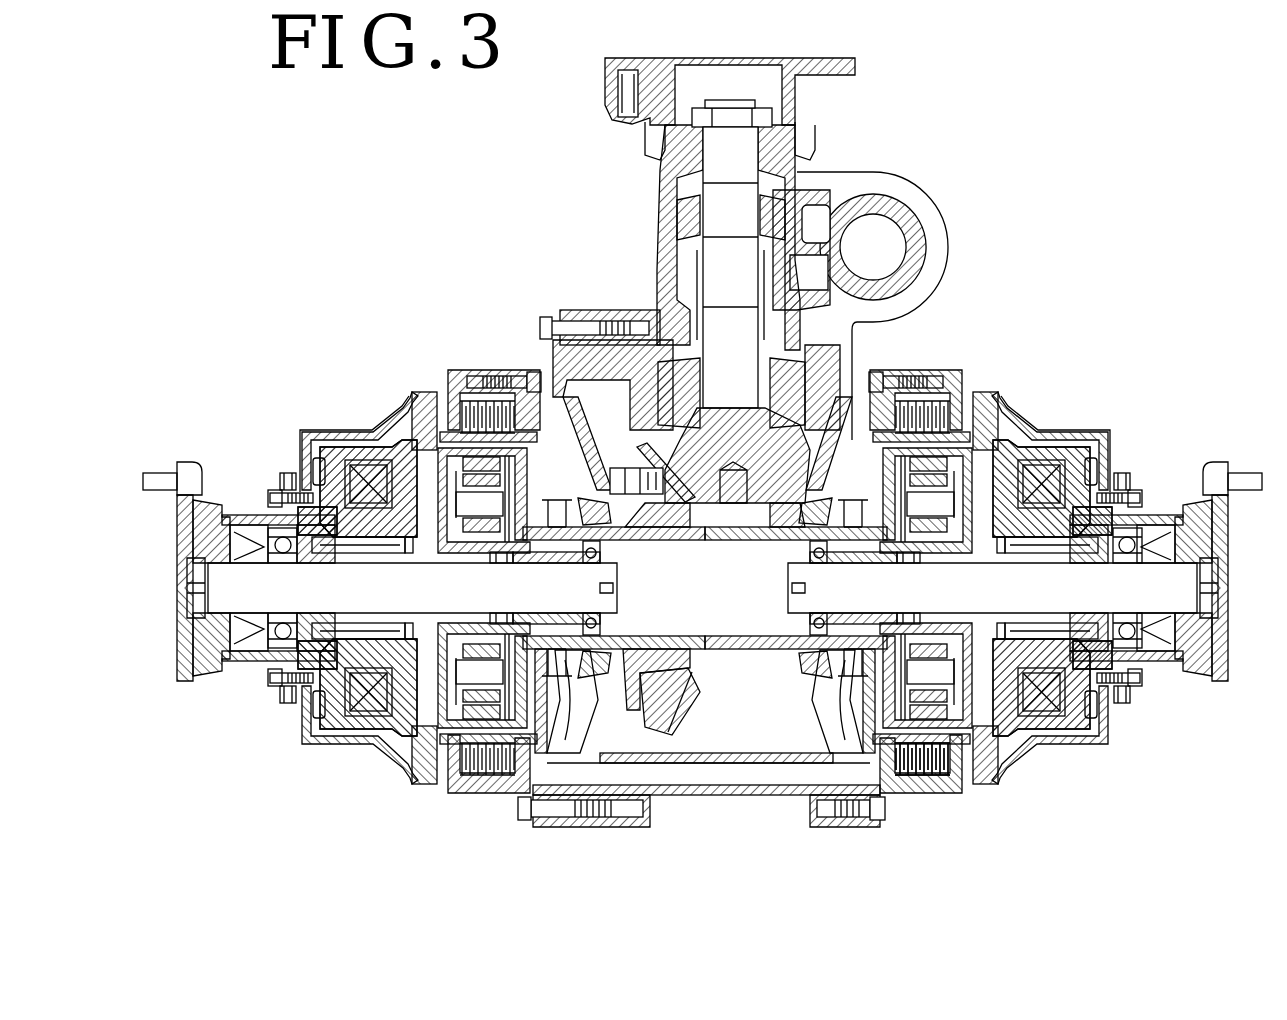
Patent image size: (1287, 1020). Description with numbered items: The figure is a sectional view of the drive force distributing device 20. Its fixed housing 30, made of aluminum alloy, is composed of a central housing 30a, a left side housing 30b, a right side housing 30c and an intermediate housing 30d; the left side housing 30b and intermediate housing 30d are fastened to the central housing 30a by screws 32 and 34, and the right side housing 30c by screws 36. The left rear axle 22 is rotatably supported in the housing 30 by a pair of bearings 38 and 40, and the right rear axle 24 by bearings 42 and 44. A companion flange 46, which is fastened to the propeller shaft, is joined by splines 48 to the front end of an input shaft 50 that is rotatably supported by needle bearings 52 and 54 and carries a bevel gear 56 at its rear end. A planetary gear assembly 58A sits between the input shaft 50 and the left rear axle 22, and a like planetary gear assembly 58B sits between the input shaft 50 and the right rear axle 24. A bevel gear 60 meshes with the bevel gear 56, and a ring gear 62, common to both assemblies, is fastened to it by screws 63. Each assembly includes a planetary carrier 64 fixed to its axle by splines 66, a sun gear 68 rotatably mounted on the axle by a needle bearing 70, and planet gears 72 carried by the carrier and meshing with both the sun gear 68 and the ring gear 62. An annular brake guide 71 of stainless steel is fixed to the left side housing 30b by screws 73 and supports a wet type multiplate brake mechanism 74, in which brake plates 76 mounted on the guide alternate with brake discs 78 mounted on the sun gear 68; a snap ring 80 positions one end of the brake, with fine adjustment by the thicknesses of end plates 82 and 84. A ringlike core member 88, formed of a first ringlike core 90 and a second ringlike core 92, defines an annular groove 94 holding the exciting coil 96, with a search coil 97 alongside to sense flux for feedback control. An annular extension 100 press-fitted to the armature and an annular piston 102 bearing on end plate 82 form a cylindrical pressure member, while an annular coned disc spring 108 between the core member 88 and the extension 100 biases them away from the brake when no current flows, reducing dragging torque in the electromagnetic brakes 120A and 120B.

The drive force distributing device 20 is at (937, 344).
The left rear axle 22 is at (216, 578).
The right rear axle 24 is at (1190, 584).
The fixed housing 30 is at (590, 288).
The central housing 30a is at (628, 311).
The left side housing 30b is at (347, 431).
The right side housing 30c is at (1039, 431).
The intermediate housing 30d is at (572, 310).
The screws 32 is at (548, 321).
The screws 34 is at (525, 822).
The screws 36 is at (873, 822).
The bearing 38 is at (283, 561).
The bearing 40 is at (601, 554).
The bearing 42 is at (1121, 551).
The bearing 44 is at (808, 550).
The companion flange 46 is at (612, 92).
The splines 48 is at (770, 156).
The input shaft 50 is at (752, 331).
The needle bearing 52 is at (680, 215).
The needle bearing 54 is at (658, 404).
The bevel gear 56 is at (688, 512).
The planetary gear assembly 58A is at (552, 699).
The planetary gear assembly 58B is at (868, 706).
The bevel gear 60 is at (691, 693).
The ring gear 62 is at (655, 535).
The screws 63 is at (614, 466).
The planetary carrier 64 is at (565, 505).
The splines 66 is at (543, 612).
The sun gear 68 is at (447, 566).
The needle bearing 70 is at (495, 616).
The annular brake guide 71 is at (446, 392).
The planet gears 72 is at (477, 549).
The screws 73 is at (544, 372).
The wet type multiplate brake mechanism 74 is at (489, 396).
The brake plates 76 is at (948, 790).
The brake discs 78 is at (927, 784).
The snap ring 80 is at (873, 377).
The end plate 82 is at (433, 795).
The end plate 84 is at (869, 763).
The ringlike core member 88 is at (352, 546).
The first ringlike core 90 is at (370, 536).
The second ringlike core 92 is at (278, 481).
The annular groove 94 is at (312, 467).
The exciting coil 96 is at (305, 438).
The search coil 97 is at (407, 550).
The annular extension 100 is at (400, 427).
The annular piston 102 is at (421, 398).
The annular coned disc spring 108 is at (410, 407).
The electromagnetic brake 120A is at (318, 426).
The electromagnetic brake 120B is at (1102, 426).